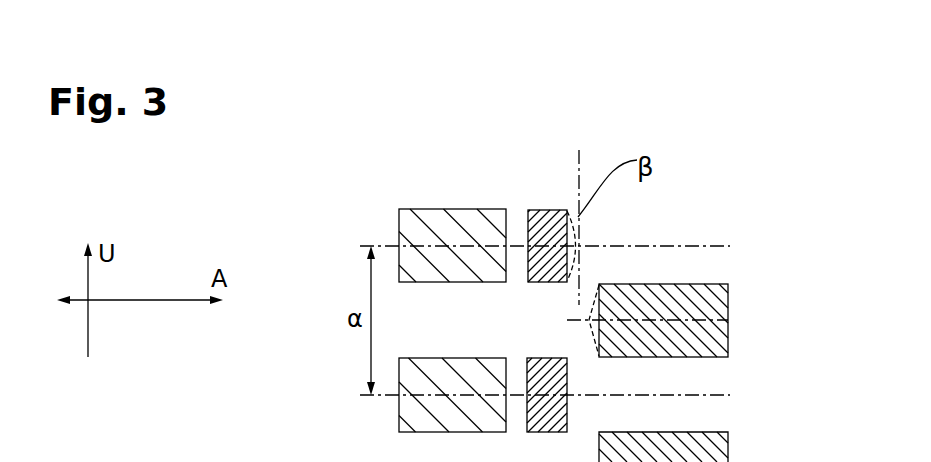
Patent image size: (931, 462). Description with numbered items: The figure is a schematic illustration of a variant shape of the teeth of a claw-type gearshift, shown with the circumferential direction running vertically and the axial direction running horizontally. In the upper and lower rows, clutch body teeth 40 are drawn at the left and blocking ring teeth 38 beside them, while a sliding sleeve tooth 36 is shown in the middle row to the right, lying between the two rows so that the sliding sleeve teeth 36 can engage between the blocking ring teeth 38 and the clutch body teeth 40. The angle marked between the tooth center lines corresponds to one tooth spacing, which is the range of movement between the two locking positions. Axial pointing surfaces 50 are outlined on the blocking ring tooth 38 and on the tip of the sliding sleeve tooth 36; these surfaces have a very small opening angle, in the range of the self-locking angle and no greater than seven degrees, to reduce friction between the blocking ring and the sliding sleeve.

The sliding sleeve teeth 36 is at (705, 302).
The blocking ring teeth 38 is at (545, 211).
The clutch body teeth 40 is at (410, 225).
The axial pointing surfaces 50 is at (572, 226).